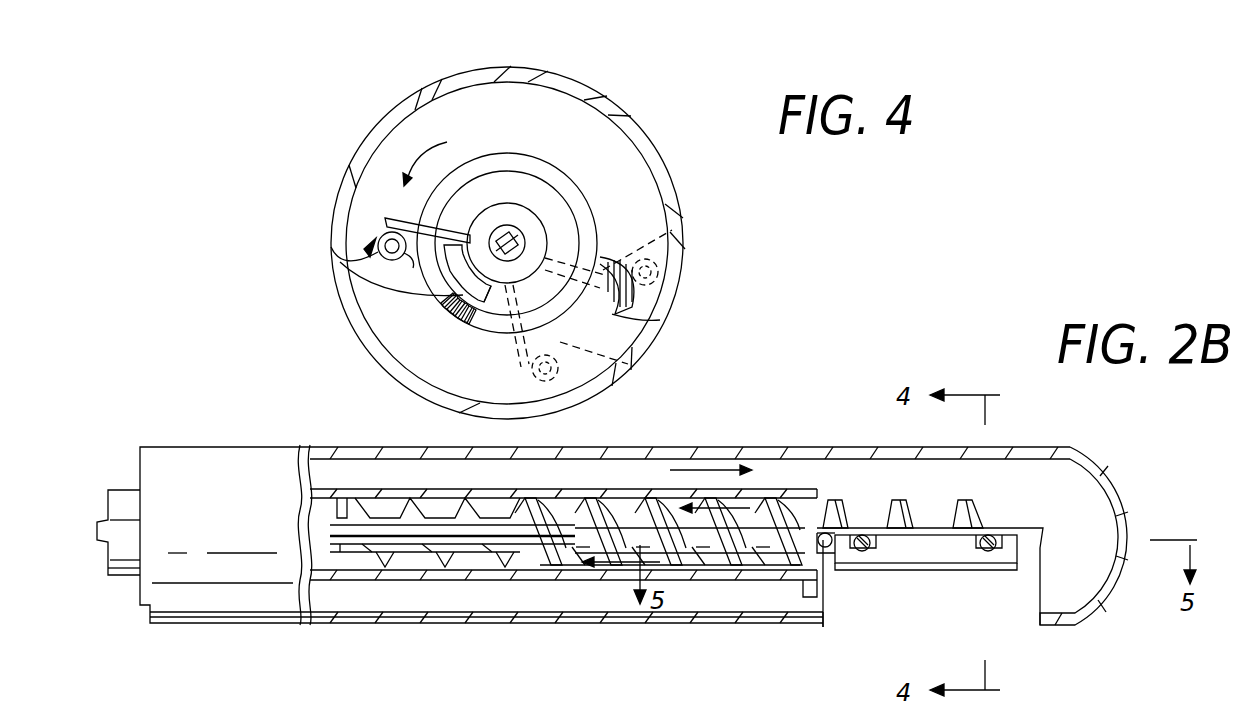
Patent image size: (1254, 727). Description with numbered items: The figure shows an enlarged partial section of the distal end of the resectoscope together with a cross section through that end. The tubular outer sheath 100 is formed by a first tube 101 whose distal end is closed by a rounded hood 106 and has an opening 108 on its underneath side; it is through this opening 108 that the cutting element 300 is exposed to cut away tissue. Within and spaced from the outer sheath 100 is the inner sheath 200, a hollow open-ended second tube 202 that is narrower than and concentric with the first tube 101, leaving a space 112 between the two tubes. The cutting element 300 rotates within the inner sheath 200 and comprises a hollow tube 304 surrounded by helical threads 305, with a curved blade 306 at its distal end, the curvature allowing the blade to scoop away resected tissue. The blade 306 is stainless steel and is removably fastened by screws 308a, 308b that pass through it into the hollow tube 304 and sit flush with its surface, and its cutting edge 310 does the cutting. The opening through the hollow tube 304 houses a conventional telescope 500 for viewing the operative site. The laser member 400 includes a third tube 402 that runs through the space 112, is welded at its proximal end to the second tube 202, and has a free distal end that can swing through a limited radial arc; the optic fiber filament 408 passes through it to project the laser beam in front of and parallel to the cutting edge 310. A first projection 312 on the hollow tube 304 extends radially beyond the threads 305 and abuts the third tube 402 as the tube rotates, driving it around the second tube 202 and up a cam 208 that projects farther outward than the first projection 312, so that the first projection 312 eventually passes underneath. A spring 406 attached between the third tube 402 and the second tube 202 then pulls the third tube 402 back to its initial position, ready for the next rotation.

In FIG. 4, the outer sheath 100 is at (594, 78).
In FIG. 2B, the outer sheath 100 is at (718, 440).
In FIG. 4, the first tube 101 is at (613, 117).
In FIG. 2B, the first tube 101 is at (786, 447).
In FIG. 2B, the rounded hood 106 is at (1126, 490).
In FIG. 2B, the opening 108 is at (920, 590).
In FIG. 2B, the space 112 is at (606, 590).
In FIG. 4, the inner sheath 200 is at (592, 188).
In FIG. 2B, the inner sheath 200 is at (630, 482).
In FIG. 4, the second tube 202 is at (580, 214).
In FIG. 2B, the second tube 202 is at (540, 497).
In FIG. 4, the second projection or cam 208 is at (661, 318).
In FIG. 2B, the cutting element 300 is at (430, 488).
In FIG. 2B, the hollow tube 304 is at (1032, 528).
In FIG. 4, the helical threads 305 is at (474, 214).
In FIG. 4, the curved blade 306 is at (443, 293).
In FIG. 2B, the curved blade 306 is at (1010, 562).
In FIG. 2B, the screw 308a is at (864, 535).
In FIG. 2B, the screw 308b is at (988, 535).
In FIG. 4, the cutting edge 310 is at (470, 332).
In FIG. 4, the first projection 312 is at (385, 226).
In FIG. 2B, the first projection 312 is at (828, 548).
In FIG. 4, the laser member 400 is at (362, 252).
In FIG. 4, the third tube 402 is at (366, 232).
In FIG. 4, the spring 406 is at (447, 279).
In FIG. 4, the optic fiber filament 408 is at (380, 254).
In FIG. 2B, the telescope 500 is at (100, 520).